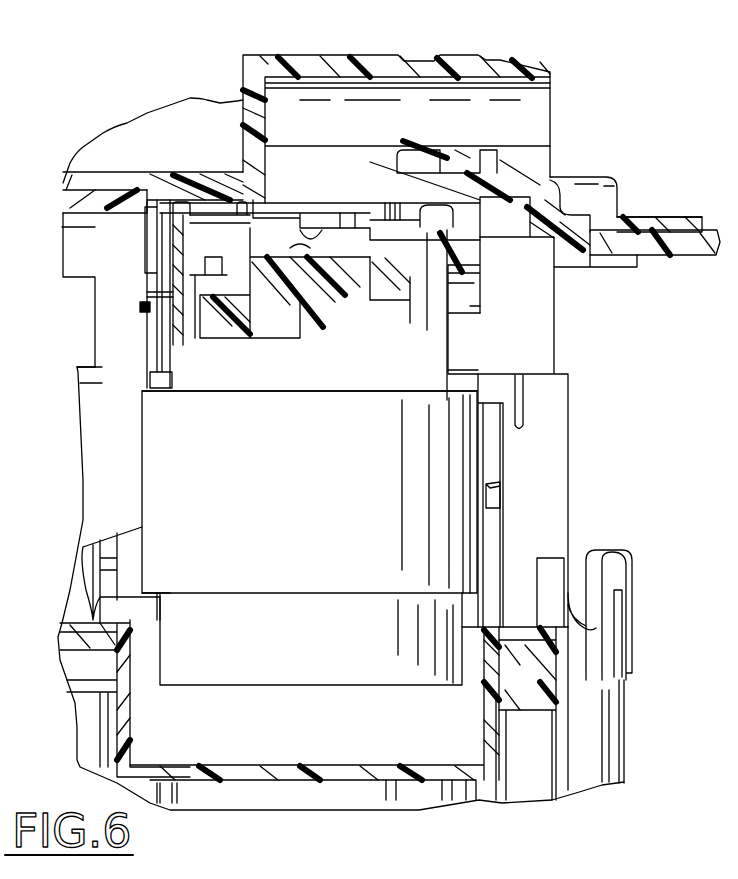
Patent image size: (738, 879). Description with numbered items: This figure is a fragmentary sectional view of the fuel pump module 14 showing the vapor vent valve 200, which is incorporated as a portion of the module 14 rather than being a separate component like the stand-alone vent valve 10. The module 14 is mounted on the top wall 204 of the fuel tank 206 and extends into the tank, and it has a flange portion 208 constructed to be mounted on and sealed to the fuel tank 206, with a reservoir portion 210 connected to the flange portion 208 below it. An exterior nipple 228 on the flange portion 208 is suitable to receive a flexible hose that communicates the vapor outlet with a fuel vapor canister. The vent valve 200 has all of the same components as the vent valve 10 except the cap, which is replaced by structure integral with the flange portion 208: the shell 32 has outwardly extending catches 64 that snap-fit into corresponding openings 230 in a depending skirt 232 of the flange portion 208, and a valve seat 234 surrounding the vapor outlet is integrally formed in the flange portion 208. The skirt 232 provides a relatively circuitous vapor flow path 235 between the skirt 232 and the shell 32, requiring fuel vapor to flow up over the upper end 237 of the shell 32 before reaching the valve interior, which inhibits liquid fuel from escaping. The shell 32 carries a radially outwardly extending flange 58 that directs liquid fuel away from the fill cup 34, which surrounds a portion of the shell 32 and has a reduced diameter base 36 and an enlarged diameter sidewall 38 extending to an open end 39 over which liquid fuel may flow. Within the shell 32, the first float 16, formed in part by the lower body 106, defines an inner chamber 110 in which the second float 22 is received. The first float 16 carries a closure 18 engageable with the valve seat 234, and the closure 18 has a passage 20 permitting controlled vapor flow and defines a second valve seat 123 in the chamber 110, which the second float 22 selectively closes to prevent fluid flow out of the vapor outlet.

The exterior nipple 228 is at (519, 66).
The fuel pump module 14 is at (576, 151).
The flange portion 208 is at (629, 215).
The fuel tank 206 is at (709, 232).
The lower body 106 is at (47, 264).
The top wall 204 is at (672, 251).
The openings 230 is at (474, 244).
The catches 64 is at (480, 270).
The flange 58 is at (475, 309).
The vapor vent valve 200 is at (469, 366).
The fuel vapor vent valve 10 is at (412, 268).
The open end 39 is at (465, 391).
The sidewall 38 is at (480, 452).
The fill cup 34 is at (479, 526).
The base 36 is at (452, 610).
The reservoir portion 210 is at (626, 690).
The second float 22 is at (328, 300).
The second valve seat 123 is at (302, 252).
The inner chamber 110 is at (377, 237).
The valve seat 234 is at (265, 217).
The closure 18 is at (347, 213).
The passage 20 is at (310, 230).
The upper end 237 is at (174, 270).
The depending skirt 232 is at (143, 247).
The vapor flow path 235 is at (160, 283).
The shell 32 is at (171, 323).
The first float 16 is at (170, 338).